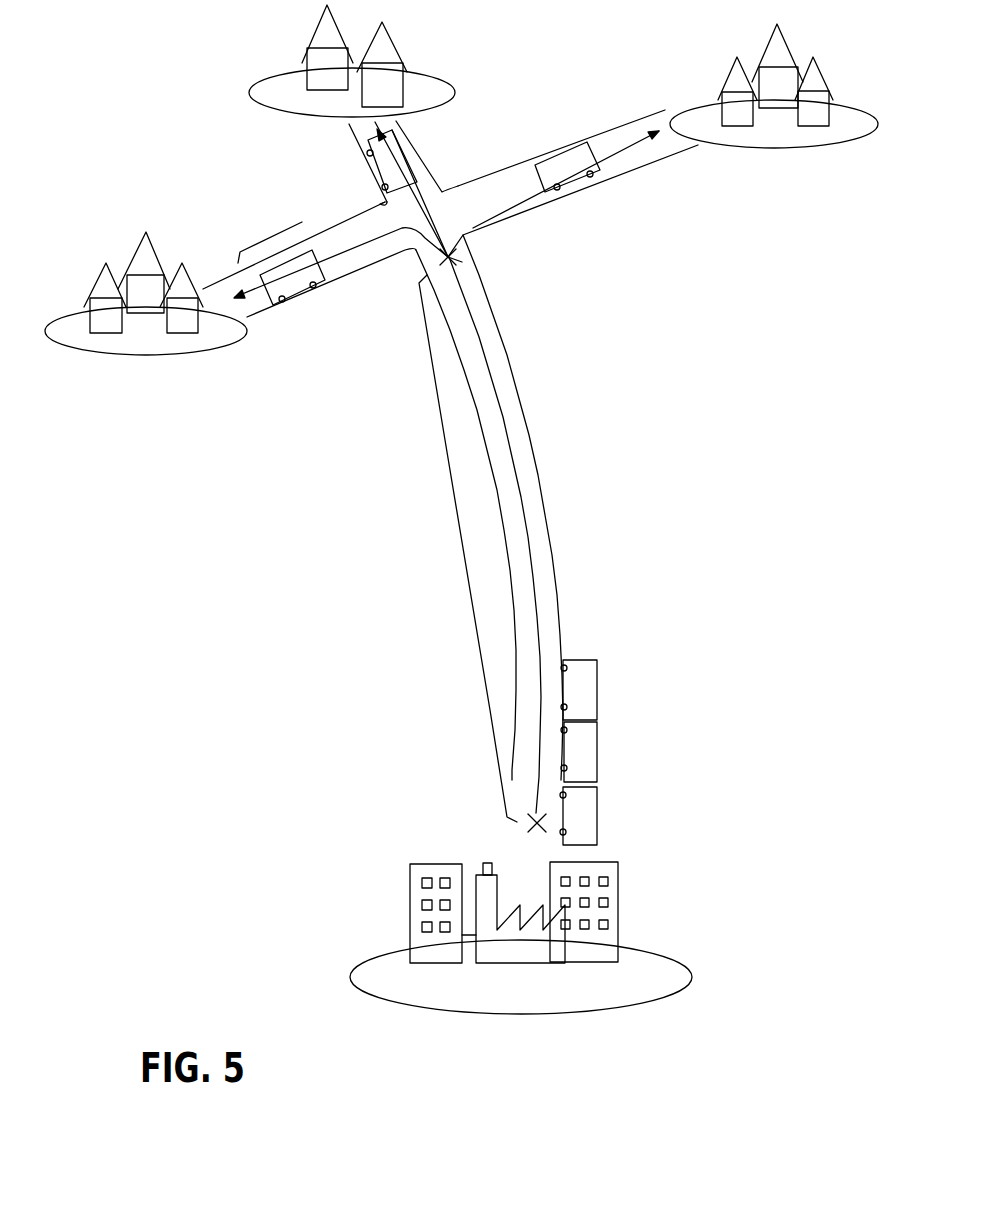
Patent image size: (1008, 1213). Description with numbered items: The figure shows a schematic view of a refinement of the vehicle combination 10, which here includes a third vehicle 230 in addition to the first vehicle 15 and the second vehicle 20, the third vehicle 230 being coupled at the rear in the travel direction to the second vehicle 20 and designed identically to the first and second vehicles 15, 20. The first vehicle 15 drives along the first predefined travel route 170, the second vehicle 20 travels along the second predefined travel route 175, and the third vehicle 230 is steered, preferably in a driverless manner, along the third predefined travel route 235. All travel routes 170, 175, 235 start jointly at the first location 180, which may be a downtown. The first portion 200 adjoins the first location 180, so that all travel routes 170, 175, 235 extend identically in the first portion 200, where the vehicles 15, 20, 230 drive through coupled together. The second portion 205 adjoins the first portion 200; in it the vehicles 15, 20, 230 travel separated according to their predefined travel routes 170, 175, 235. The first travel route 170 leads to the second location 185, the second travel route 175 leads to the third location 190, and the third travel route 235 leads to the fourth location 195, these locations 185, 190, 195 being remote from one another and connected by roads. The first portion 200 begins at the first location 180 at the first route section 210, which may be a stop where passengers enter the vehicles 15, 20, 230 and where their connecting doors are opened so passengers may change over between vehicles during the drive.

The vehicle combination 10 is at (639, 721).
The first vehicle 15 is at (592, 688).
The second vehicle 20 is at (614, 752).
The first predefined travel route 170 is at (387, 238).
The second predefined travel route 175 is at (443, 190).
The first location 180 is at (660, 967).
The second location 185 is at (147, 340).
The third location 190 is at (436, 80).
The fourth location 195 is at (698, 113).
The first portion 200 is at (460, 528).
The second portion 205 is at (302, 222).
The first route section 210 is at (462, 262).
The third vehicle 230 is at (573, 153).
The third predefined travel route 235 is at (477, 230).